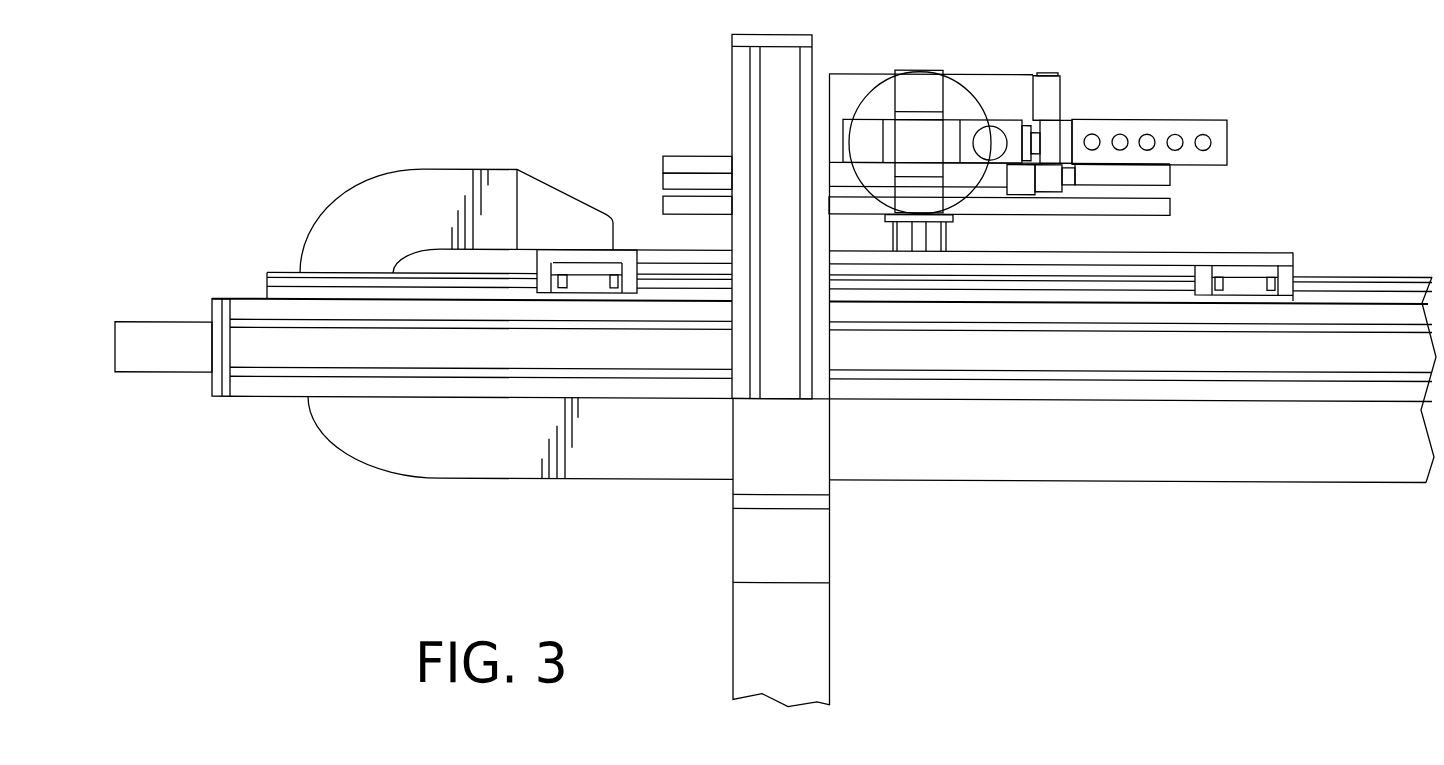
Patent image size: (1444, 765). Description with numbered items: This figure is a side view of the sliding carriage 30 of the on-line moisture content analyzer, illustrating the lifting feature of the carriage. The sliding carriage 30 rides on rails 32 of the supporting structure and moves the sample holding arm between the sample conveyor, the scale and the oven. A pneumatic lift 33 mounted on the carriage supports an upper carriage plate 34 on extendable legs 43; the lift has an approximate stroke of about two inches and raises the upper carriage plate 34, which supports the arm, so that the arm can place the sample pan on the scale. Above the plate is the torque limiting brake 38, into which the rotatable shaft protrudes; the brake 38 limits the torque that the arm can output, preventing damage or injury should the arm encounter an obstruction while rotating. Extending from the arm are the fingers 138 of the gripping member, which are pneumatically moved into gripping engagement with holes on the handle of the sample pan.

The sliding carriage 30 is at (685, 164).
The rails 32 is at (263, 341).
The pneumatic lift 33 is at (962, 234).
The upper carriage plate 34 is at (1163, 203).
The torque limiting brake 38 is at (963, 90).
The extendable legs 43 is at (896, 234).
The fingers 138 is at (1215, 124).